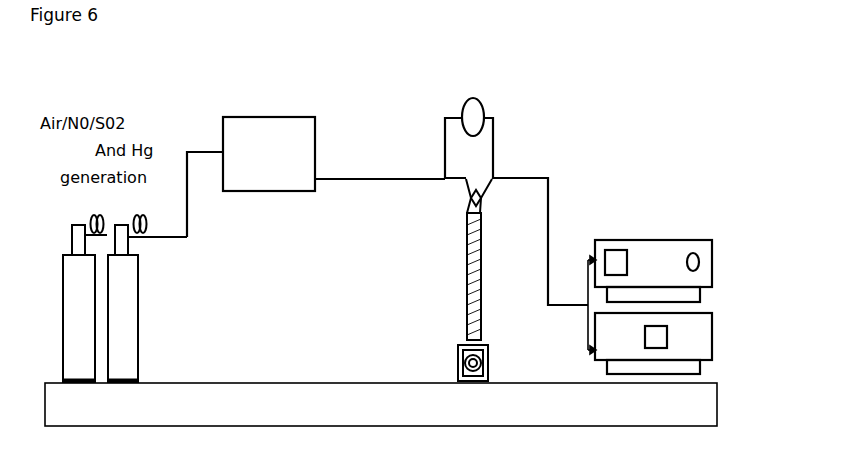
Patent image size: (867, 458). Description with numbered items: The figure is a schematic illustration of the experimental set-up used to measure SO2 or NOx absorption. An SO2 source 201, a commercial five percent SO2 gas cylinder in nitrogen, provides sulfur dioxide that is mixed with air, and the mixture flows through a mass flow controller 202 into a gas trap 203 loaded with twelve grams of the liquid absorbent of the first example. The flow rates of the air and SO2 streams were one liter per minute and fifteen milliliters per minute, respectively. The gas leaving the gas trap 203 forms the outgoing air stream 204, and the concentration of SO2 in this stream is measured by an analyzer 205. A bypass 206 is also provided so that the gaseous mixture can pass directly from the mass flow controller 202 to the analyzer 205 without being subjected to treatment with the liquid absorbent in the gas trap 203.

The SO2 source 201 is at (140, 306).
The mass flow controller 202 is at (269, 141).
The gas trap 203 is at (481, 317).
The outgoing air stream 204 is at (527, 178).
The analyzer 205 is at (720, 307).
The bypass 206 is at (487, 103).